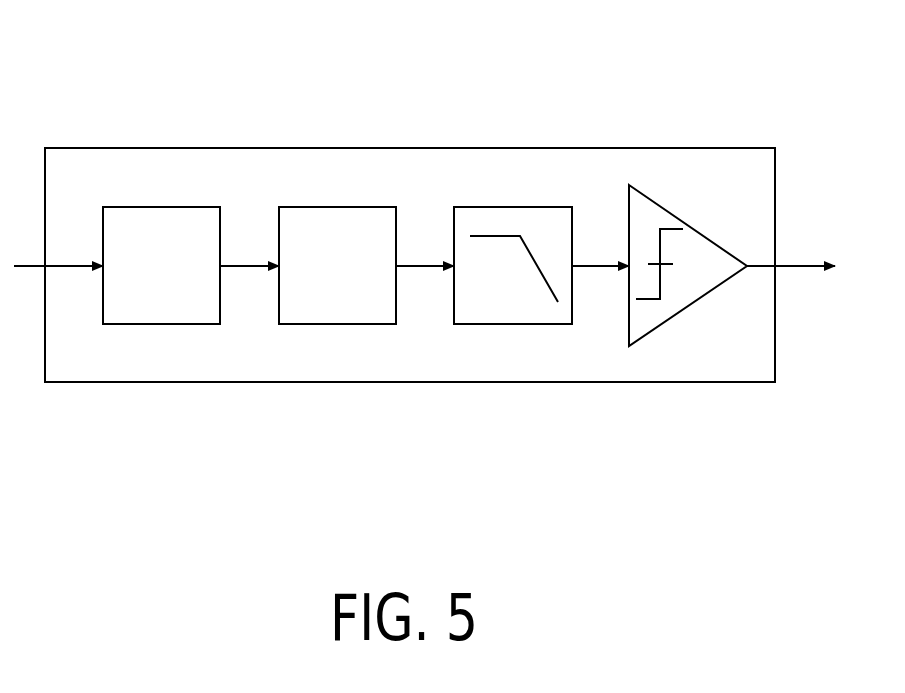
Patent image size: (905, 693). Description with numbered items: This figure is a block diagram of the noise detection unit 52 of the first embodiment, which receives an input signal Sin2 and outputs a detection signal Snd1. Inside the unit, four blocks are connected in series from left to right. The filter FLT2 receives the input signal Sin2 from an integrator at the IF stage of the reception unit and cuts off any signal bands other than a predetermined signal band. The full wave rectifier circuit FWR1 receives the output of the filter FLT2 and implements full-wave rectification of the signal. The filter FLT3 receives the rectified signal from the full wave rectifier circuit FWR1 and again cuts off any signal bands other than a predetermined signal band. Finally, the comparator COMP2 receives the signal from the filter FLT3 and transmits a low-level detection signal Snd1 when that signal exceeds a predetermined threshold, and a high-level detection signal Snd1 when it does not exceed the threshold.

The noise detection unit 52 is at (776, 148).
The filter FLT2 is at (150, 207).
The full wave rectifier circuit FWR1 is at (335, 207).
The filter FLT3 is at (492, 207).
The comparator COMP2 is at (652, 200).
The input signal Sin2 is at (58, 252).
The detection signal Snd1 is at (791, 255).